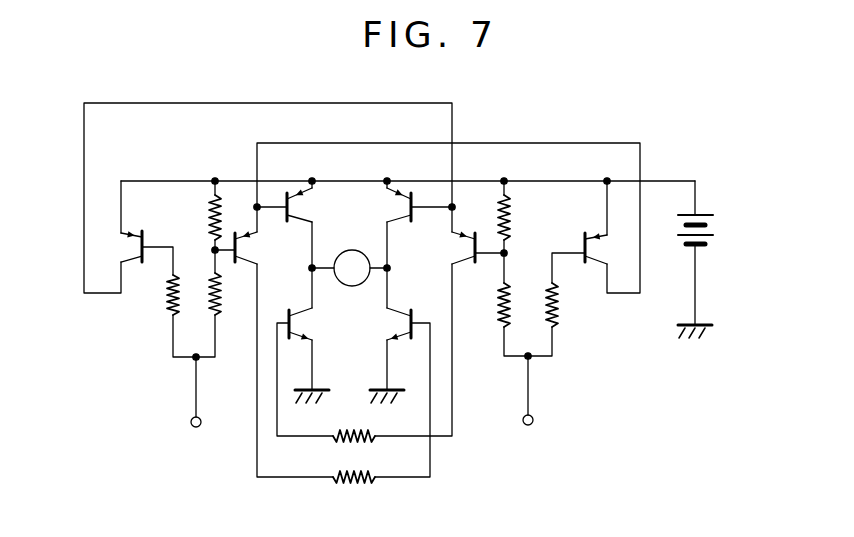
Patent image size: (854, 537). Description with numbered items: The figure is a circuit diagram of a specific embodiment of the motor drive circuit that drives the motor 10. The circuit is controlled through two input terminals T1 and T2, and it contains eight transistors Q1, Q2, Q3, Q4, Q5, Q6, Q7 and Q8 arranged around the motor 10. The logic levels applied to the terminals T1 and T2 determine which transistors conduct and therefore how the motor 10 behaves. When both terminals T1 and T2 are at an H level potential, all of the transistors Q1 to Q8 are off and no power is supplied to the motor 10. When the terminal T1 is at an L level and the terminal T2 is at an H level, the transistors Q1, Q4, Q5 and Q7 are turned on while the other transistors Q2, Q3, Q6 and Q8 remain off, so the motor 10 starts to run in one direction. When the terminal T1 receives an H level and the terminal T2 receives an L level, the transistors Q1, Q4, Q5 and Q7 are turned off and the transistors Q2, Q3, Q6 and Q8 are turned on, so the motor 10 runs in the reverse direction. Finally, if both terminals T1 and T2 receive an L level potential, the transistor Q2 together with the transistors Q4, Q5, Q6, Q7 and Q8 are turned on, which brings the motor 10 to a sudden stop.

The motor 10 is at (345, 262).
The transistor Q1 is at (316, 224).
The transistor Q2 is at (317, 329).
The transistor Q3 is at (385, 224).
The transistor Q4 is at (385, 329).
The transistor Q5 is at (261, 247).
The transistor Q6 is at (450, 254).
The transistor Q7 is at (144, 231).
The transistor Q8 is at (608, 225).
The terminal T1 is at (197, 428).
The terminal T2 is at (528, 426).